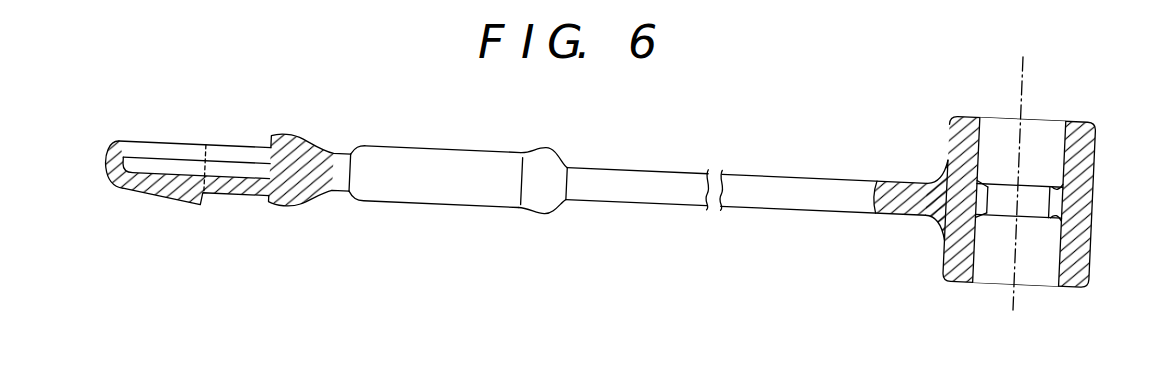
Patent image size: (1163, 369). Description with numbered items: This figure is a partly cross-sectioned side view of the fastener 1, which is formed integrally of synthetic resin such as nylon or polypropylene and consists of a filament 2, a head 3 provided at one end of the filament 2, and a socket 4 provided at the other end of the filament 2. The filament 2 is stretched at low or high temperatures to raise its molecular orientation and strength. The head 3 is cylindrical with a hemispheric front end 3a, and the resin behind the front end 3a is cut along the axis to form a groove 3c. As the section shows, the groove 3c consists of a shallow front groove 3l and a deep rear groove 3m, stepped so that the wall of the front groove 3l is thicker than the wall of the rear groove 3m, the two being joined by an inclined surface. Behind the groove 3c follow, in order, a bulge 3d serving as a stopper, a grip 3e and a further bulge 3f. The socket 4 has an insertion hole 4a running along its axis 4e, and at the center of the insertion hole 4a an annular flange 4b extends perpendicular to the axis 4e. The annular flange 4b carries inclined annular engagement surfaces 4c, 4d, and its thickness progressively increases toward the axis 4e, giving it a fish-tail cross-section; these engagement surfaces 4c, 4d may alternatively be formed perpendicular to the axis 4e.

The fastener 1 is at (637, 171).
The filament 2 is at (761, 176).
The head 3 is at (197, 135).
The front end 3a is at (110, 183).
The groove 3c is at (238, 160).
The bulge (stopper) 3d is at (298, 193).
The grip 3e is at (410, 192).
The bulge 3f is at (532, 197).
The front groove 3l is at (150, 168).
The rear groove 3m is at (248, 177).
The socket 4 is at (957, 112).
The insertion hole 4a is at (1050, 127).
The annular flange 4b is at (978, 193).
The annular engagement surface 4c is at (1066, 184).
The annular engagement surface 4d is at (1061, 220).
The axis 4e is at (1020, 75).